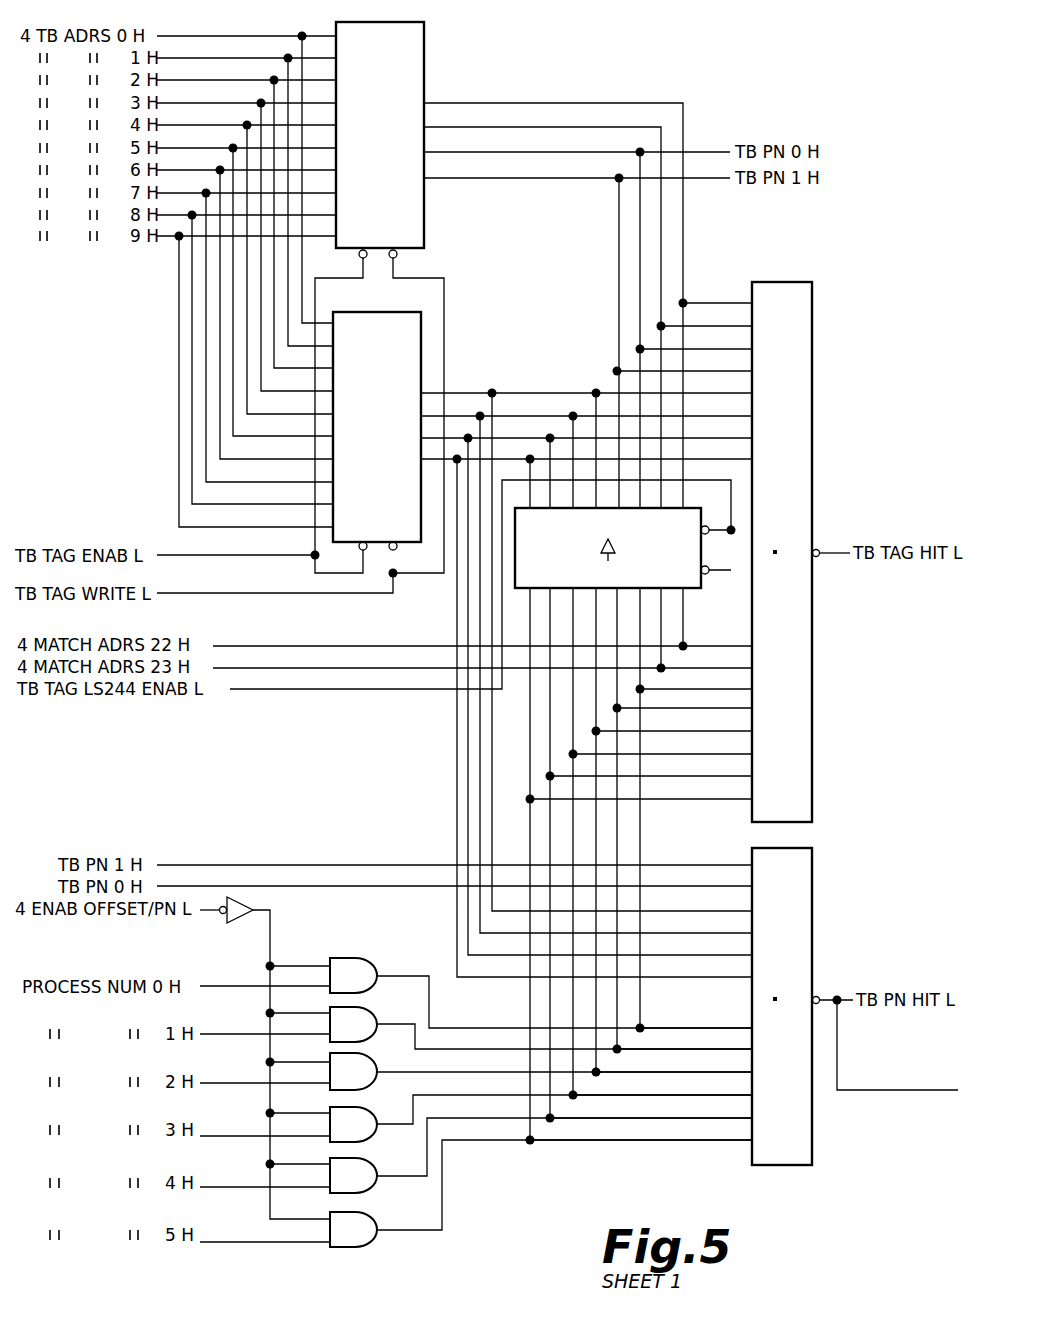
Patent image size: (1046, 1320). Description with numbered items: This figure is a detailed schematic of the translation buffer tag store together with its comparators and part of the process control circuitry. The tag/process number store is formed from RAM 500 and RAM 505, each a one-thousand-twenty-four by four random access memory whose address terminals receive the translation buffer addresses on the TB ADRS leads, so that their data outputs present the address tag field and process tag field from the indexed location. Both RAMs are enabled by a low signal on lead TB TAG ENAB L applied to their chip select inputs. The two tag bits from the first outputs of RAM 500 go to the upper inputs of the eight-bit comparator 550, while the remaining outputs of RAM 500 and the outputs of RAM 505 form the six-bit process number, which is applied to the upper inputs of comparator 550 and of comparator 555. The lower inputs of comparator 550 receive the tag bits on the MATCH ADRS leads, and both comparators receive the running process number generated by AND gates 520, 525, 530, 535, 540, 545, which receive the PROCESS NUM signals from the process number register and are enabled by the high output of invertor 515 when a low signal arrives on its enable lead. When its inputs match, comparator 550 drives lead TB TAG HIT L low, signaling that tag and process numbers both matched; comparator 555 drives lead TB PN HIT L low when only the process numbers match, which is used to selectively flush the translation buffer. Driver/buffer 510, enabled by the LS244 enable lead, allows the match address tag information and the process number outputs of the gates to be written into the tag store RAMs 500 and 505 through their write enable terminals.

The RAM 500 is at (425, 38).
The RAM 505 is at (368, 312).
The driver/buffer 510 is at (702, 589).
The invertor 515 is at (244, 917).
The AND gate 520 is at (350, 957).
The AND gate 525 is at (352, 1006).
The AND gate 530 is at (352, 1052).
The AND gate 535 is at (352, 1106).
The AND gate 540 is at (352, 1157).
The AND gate 545 is at (352, 1211).
The 8-bit comparator 550 is at (812, 379).
The comparator 555 is at (812, 912).